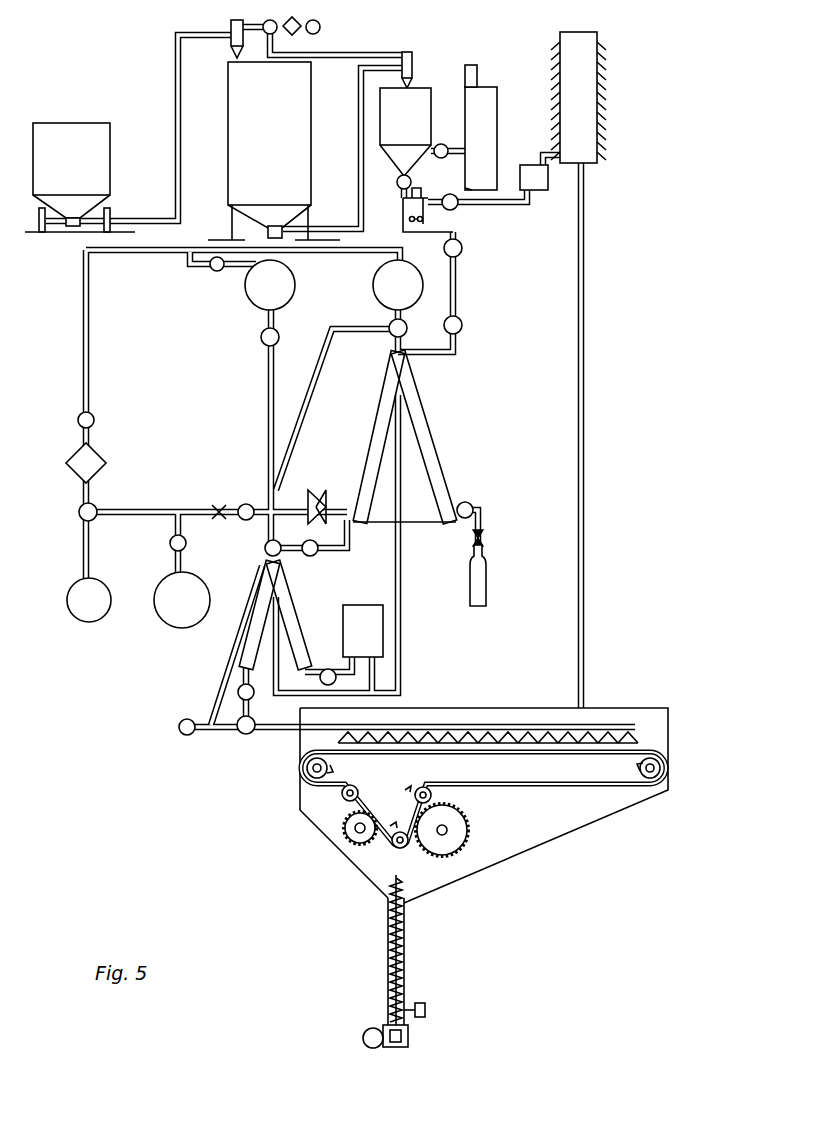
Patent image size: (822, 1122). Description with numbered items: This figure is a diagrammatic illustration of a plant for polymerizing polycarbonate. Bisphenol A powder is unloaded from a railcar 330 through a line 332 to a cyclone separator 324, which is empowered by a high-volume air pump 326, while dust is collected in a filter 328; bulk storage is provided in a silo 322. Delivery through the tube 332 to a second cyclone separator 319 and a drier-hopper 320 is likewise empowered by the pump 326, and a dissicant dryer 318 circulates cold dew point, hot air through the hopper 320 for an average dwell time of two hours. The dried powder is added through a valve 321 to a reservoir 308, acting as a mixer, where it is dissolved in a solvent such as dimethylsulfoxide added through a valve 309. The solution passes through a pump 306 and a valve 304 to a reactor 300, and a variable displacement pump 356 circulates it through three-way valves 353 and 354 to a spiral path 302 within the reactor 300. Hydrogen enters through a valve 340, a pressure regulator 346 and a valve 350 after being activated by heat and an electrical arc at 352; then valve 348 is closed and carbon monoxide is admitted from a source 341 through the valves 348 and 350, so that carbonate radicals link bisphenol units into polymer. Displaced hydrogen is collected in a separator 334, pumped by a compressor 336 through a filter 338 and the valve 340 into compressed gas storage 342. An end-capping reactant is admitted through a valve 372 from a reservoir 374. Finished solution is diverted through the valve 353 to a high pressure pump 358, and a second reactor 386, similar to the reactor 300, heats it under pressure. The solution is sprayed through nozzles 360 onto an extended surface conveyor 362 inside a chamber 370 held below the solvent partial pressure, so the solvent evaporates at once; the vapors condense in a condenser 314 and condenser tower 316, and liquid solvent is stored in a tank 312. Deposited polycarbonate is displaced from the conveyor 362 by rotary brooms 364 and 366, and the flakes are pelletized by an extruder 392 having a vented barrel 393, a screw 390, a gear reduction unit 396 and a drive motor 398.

The reactor 300 is at (425, 402).
The spiral path 302 is at (432, 449).
The valve 304 is at (463, 326).
The pump 306 is at (462, 248).
The reservoir 308 is at (430, 219).
The valve 309 is at (464, 190).
The reservoir 312 is at (548, 186).
The condenser 314 is at (578, 132).
The condenser tower 316 is at (600, 82).
The dissicant dryer 318 is at (490, 114).
The cyclone separator 319 is at (413, 60).
The drier-hopper 320 is at (397, 108).
The valve 321 is at (411, 181).
The silo 322 is at (300, 166).
The cyclone separator 324 is at (232, 44).
The high-volume air pump 326 is at (322, 23).
The filter 328 is at (293, 35).
The railcar 330 is at (103, 178).
The line 332 is at (177, 94).
The separator 334 is at (373, 283).
The compressor 336 is at (95, 419).
The filter 338 is at (100, 463).
The valve 340 is at (78, 514).
The carbon monoxide source 341 is at (183, 628).
The storage 342 is at (89, 622).
The pressure regulator 346 is at (230, 492).
The valve 348 is at (170, 544).
The valve 350 is at (246, 521).
The hydrogen activator 352 is at (336, 474).
The 3-way valve 353 is at (265, 549).
The 3-way valve 354 is at (404, 328).
The variable displacement pump 356 is at (311, 557).
The high pressure pump 358 is at (254, 694).
The nozzles 360 is at (530, 730).
The extended surface conveyor 362 is at (530, 756).
The rotary broom 364 is at (353, 838).
The rotary broom 366 is at (455, 852).
The chamber 370 is at (445, 712).
The valve 372 is at (472, 503).
The reservoir 374 is at (487, 583).
The reactor 386 is at (292, 597).
The screw 390 is at (393, 941).
The extruder 392 is at (400, 958).
The vented barrel 393 is at (405, 925).
The gear reduction unit 396 is at (410, 1036).
The drive motor 398 is at (364, 1041).